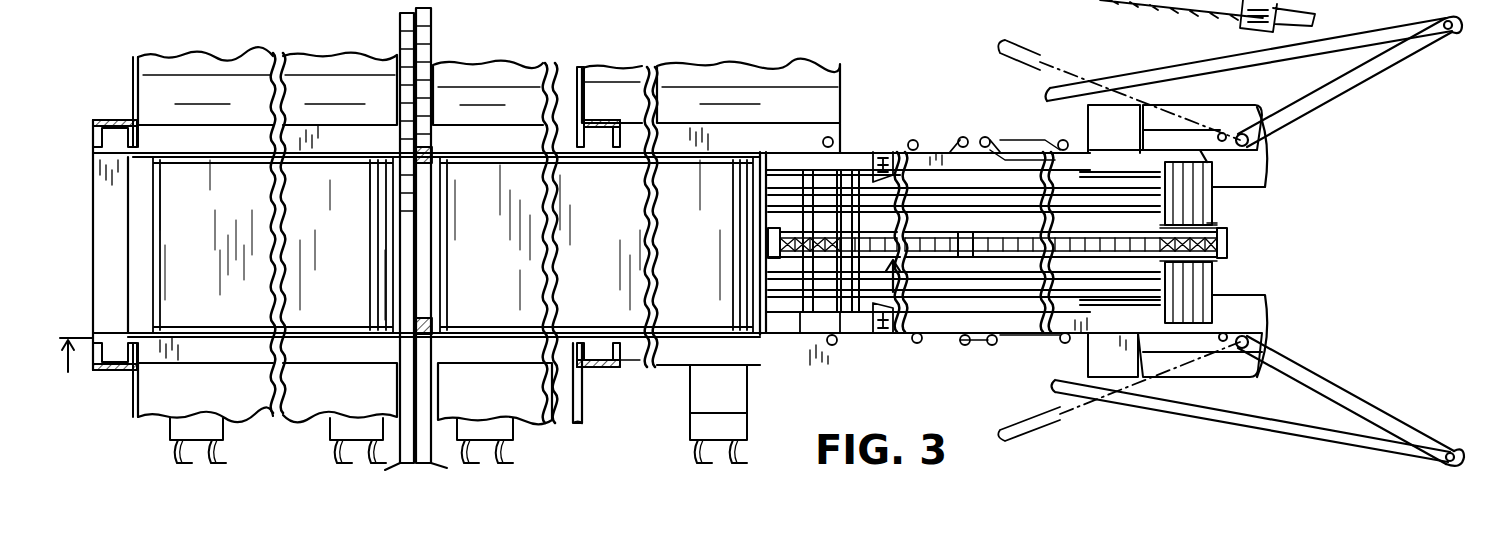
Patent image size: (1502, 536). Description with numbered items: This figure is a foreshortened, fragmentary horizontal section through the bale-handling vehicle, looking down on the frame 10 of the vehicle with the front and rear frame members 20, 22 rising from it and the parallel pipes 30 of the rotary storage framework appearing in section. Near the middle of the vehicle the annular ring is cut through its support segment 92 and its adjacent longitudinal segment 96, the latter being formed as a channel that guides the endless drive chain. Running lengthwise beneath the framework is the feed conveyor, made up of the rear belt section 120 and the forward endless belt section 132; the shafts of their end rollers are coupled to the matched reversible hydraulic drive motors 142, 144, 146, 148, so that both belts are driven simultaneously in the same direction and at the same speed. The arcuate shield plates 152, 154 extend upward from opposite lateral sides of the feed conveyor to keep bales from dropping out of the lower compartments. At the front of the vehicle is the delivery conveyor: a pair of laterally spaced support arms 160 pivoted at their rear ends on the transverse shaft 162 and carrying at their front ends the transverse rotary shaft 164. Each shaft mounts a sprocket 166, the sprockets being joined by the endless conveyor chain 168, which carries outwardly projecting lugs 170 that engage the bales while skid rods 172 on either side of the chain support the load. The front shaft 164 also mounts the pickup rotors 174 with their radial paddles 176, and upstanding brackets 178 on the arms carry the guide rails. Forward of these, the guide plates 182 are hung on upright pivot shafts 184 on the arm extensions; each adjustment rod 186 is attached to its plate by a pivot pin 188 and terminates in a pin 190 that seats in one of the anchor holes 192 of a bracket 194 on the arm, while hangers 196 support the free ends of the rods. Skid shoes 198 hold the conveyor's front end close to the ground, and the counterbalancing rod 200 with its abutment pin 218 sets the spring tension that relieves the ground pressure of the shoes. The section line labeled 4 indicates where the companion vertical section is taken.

The section line 4 is at (485, 323).
The frame 10 is at (683, 348).
The front frame member 20 is at (608, 120).
The rear frame member 22 is at (122, 122).
The parallel pipes 30 is at (432, 150).
The support segment 92 is at (432, 22).
The longitudinal segment 96 is at (400, 42).
The rear belt section 120 is at (324, 249).
The forward endless belt section 132 is at (614, 252).
The reversible hydraulic drive motor 142 is at (180, 428).
The reversible hydraulic drive motor 144 is at (345, 430).
The reversible hydraulic drive motor 146 is at (502, 430).
The reversible hydraulic drive motor 148 is at (735, 423).
The arcuate shield plate 152 is at (247, 407).
The arcuate shield plate 154 is at (307, 68).
The support arms 160 is at (1020, 160).
The transverse shaft 162 is at (805, 345).
The transverse rotary shaft 164 is at (1196, 223).
The sprocket 166 is at (770, 254).
The endless conveyor chain 168 is at (962, 232).
The lugs 170 is at (768, 242).
The skid rods 172 is at (832, 185).
The pickup rotors 174 is at (1197, 193).
The radial paddles 176 is at (1208, 223).
The upstanding brackets 178 is at (913, 140).
The guide plates 182 is at (1355, 80).
The upright pivot shaft 184 is at (1263, 150).
The adjustment rod 186 is at (1210, 68).
The pivot pin 188 is at (1446, 22).
The pin 190 is at (990, 346).
The anchor holes 192 is at (985, 137).
The bracket 194 is at (995, 150).
The hangers 196 is at (880, 150).
The skid shoes 198 is at (1240, 118).
The rod 200 is at (1078, 0).
The abutment pin 218 is at (1110, 6).